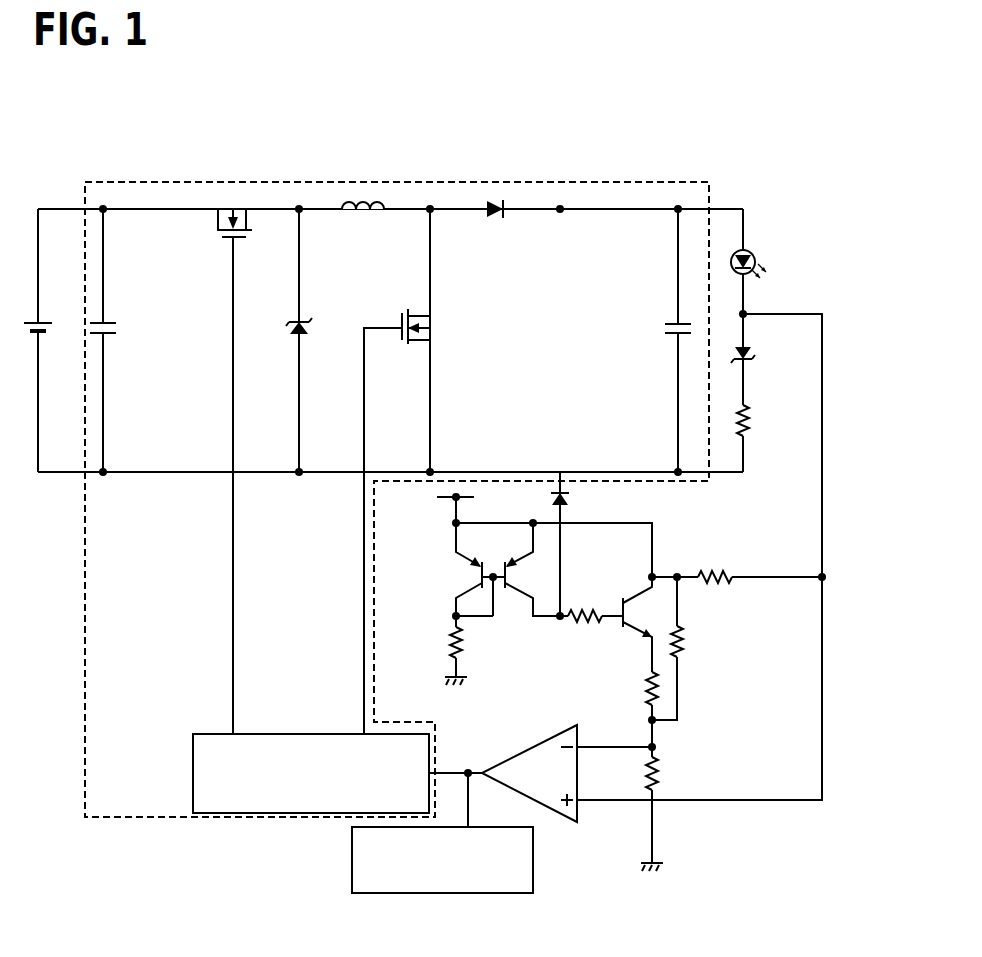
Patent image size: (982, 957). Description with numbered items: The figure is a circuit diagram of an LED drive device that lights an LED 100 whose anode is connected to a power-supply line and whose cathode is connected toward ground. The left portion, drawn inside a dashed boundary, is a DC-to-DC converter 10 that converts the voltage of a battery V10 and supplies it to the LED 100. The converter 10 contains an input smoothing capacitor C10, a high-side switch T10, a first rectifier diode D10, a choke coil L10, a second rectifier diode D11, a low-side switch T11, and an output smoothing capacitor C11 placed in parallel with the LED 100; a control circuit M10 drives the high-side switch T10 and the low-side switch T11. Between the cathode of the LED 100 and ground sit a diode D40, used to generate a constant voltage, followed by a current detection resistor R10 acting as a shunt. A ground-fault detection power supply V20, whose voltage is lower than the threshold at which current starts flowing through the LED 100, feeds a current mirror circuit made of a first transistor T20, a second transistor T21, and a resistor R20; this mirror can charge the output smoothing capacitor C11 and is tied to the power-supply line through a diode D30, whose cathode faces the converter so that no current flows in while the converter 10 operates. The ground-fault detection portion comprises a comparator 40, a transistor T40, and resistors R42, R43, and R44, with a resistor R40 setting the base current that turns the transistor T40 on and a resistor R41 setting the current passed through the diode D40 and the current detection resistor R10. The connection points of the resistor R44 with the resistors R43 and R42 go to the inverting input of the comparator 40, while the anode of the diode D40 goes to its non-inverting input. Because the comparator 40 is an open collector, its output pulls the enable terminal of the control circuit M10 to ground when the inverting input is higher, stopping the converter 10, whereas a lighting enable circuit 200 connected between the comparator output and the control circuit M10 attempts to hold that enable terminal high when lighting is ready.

The DC-to-DC converter 10 is at (170, 183).
The battery V10 is at (44, 320).
The input smoothing capacitor C10 is at (110, 320).
The high-side switch T10 is at (227, 238).
The first rectifier diode D10 is at (307, 318).
The choke coil L10 is at (385, 202).
The second rectifier diode D11 is at (502, 205).
The low-side switch T11 is at (403, 320).
The output smoothing capacitor C11 is at (668, 322).
The LED 100 is at (753, 250).
The diode D40 is at (752, 355).
The current detection resistor R10 is at (747, 405).
The ground-fault detection power supply V20 is at (438, 497).
The diode D30 is at (568, 497).
The first transistor T20 is at (470, 565).
The second transistor T21 is at (513, 592).
The transistor T40 is at (625, 603).
The resistor R20 is at (453, 633).
The resistor R40 is at (585, 622).
The resistor R41 is at (715, 573).
The resistor R42 is at (648, 680).
The resistor R43 is at (685, 637).
The resistor R44 is at (657, 760).
The comparator 40 is at (535, 745).
The control circuit M10 is at (195, 733).
The lighting enable circuit 200 is at (352, 850).